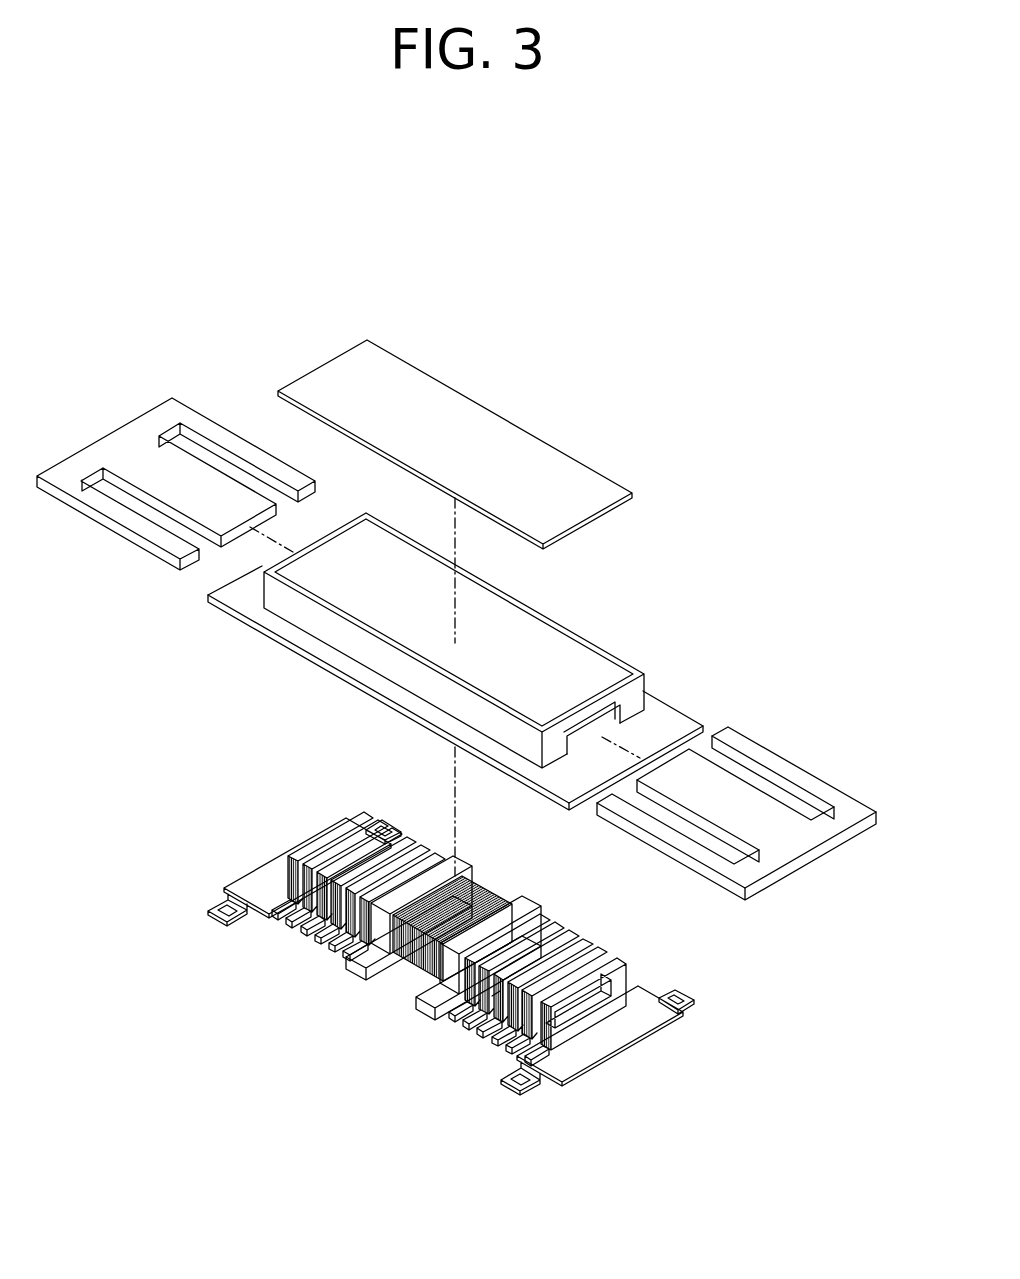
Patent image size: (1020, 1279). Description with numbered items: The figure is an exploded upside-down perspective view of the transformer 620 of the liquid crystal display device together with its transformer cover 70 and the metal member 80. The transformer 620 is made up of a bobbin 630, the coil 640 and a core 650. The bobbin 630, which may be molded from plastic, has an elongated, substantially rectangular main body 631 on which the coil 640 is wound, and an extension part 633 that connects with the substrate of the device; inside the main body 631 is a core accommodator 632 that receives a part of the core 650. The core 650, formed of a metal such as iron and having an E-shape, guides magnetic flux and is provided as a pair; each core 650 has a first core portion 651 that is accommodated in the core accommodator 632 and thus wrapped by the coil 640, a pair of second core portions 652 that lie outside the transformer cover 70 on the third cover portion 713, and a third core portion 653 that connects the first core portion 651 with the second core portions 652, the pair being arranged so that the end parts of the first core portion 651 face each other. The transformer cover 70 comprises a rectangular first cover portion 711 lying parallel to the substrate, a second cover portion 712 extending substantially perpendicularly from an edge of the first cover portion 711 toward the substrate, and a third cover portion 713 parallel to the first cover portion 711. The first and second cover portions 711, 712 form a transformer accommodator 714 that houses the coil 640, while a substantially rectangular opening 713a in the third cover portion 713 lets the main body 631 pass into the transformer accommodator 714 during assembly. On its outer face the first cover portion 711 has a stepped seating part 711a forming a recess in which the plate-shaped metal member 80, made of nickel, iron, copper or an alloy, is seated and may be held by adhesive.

The transformer cover 70 is at (458, 675).
The metal member 80 is at (527, 450).
The first cover portion 711 is at (458, 640).
The seating part 711a is at (362, 593).
The second cover portion 712 is at (455, 713).
The third cover portion 713 is at (404, 701).
The opening 713a is at (573, 743).
The transformer accommodator 714 is at (602, 723).
The transformer 620 is at (505, 999).
The bobbin 630 is at (462, 999).
The main body 631 is at (382, 935).
The core accommodator 632 is at (588, 1000).
The extension part 633 is at (547, 1050).
The coil 640 is at (514, 1089).
The core 650 is at (749, 865).
The first core portion 651 is at (685, 770).
The second core portions 652 is at (647, 827).
The third core portion 653 is at (803, 842).